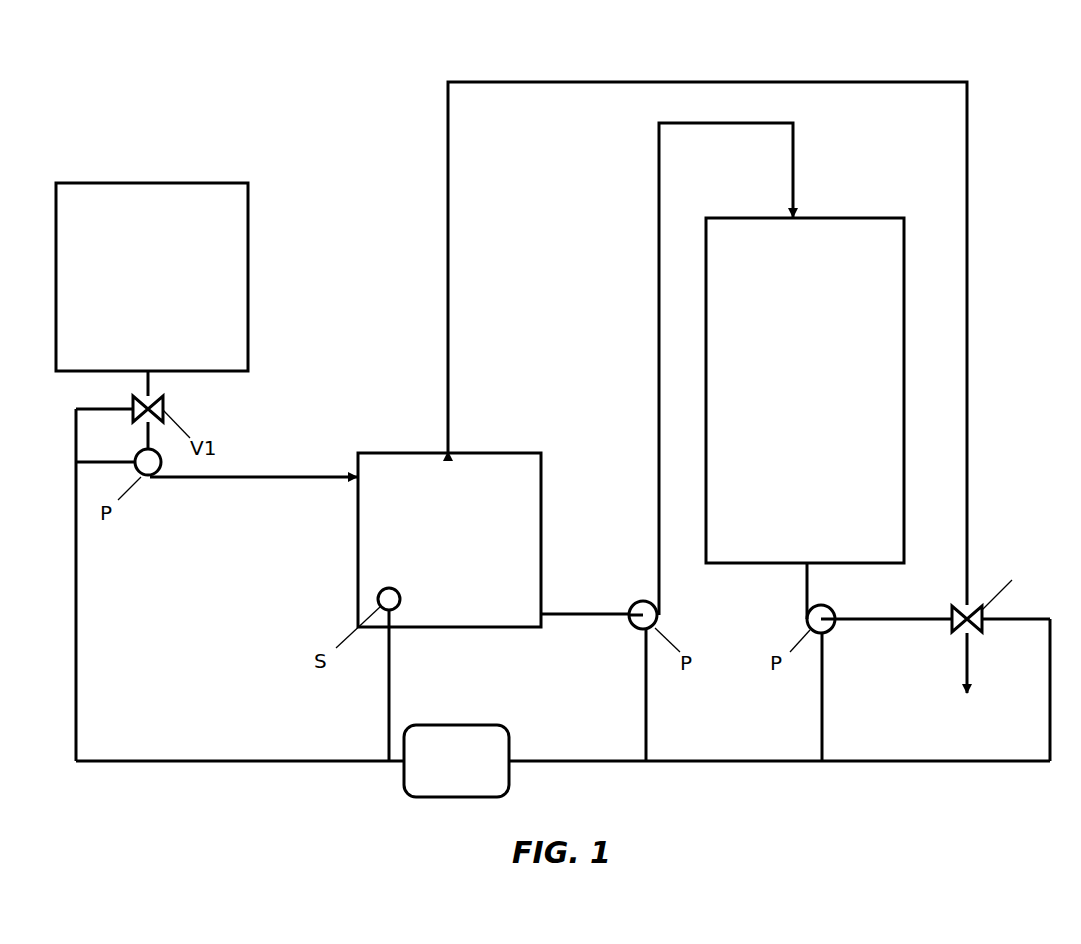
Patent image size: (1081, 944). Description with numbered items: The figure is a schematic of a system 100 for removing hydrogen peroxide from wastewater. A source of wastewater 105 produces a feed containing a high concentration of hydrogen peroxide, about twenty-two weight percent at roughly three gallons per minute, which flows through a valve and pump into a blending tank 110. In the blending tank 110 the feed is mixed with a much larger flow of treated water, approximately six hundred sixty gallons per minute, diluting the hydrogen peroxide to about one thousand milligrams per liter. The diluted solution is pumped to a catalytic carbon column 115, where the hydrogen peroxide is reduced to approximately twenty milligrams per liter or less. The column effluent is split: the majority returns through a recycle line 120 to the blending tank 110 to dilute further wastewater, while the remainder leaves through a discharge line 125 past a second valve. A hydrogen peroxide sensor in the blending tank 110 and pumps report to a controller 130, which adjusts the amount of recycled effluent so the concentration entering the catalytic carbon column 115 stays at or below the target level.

The system 100 is at (253, 100).
The source of wastewater 105 is at (164, 281).
The blending tank 110 is at (468, 550).
The catalytic carbon column 115 is at (820, 354).
The recycle line 120 is at (678, 82).
The discharge line 125 is at (966, 641).
The controller 130 is at (475, 766).